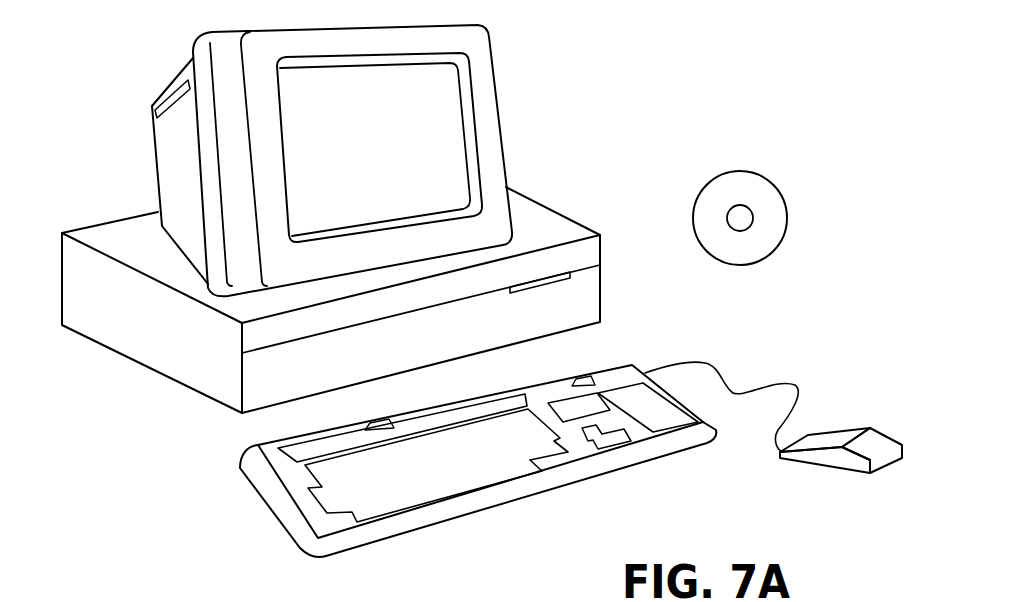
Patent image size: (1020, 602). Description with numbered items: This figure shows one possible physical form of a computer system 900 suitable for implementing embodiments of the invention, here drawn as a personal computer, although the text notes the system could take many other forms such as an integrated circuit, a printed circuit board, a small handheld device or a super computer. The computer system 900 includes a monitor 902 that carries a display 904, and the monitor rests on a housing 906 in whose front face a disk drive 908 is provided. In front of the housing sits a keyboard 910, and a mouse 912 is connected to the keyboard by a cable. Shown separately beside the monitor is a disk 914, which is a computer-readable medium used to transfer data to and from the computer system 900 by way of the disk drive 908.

The computer system 900 is at (638, 78).
The monitor 902 is at (502, 132).
The display 904 is at (455, 97).
The housing 906 is at (186, 388).
The disk drive 908 is at (573, 275).
The keyboard 910 is at (585, 478).
The mouse 912 is at (875, 440).
The disk 914 is at (758, 173).